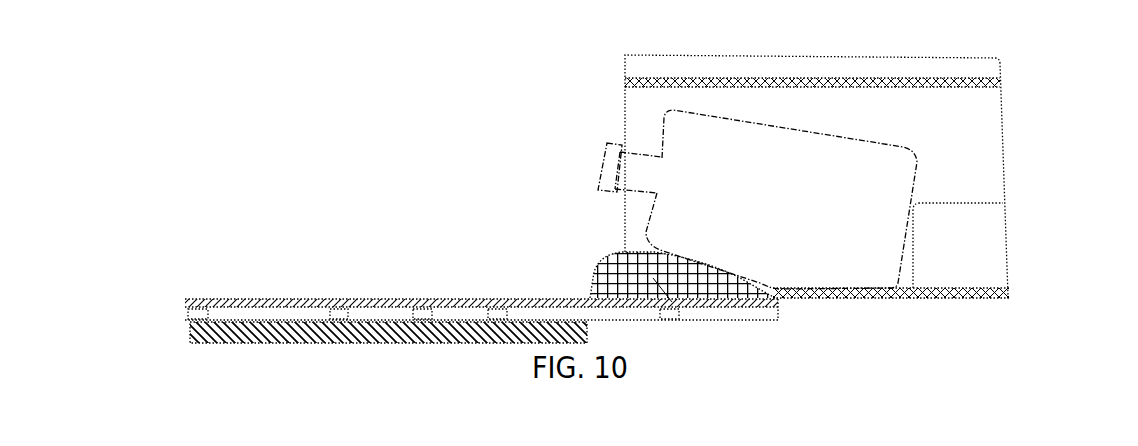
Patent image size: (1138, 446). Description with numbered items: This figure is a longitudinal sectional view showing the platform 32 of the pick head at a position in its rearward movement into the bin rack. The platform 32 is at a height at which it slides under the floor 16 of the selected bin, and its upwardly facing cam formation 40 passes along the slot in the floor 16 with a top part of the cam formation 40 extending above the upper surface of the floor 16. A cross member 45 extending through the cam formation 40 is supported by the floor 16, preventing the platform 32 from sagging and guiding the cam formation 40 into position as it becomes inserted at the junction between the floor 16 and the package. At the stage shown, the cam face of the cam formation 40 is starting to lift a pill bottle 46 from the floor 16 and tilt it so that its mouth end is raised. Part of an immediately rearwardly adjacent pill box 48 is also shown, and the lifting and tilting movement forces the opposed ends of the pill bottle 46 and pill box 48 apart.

The floor 16 is at (903, 298).
The platform 32 is at (448, 298).
The cam formation 40 is at (690, 318).
The cross member 45 is at (637, 283).
The pill bottle 46 is at (773, 255).
The pill box 48 is at (962, 246).